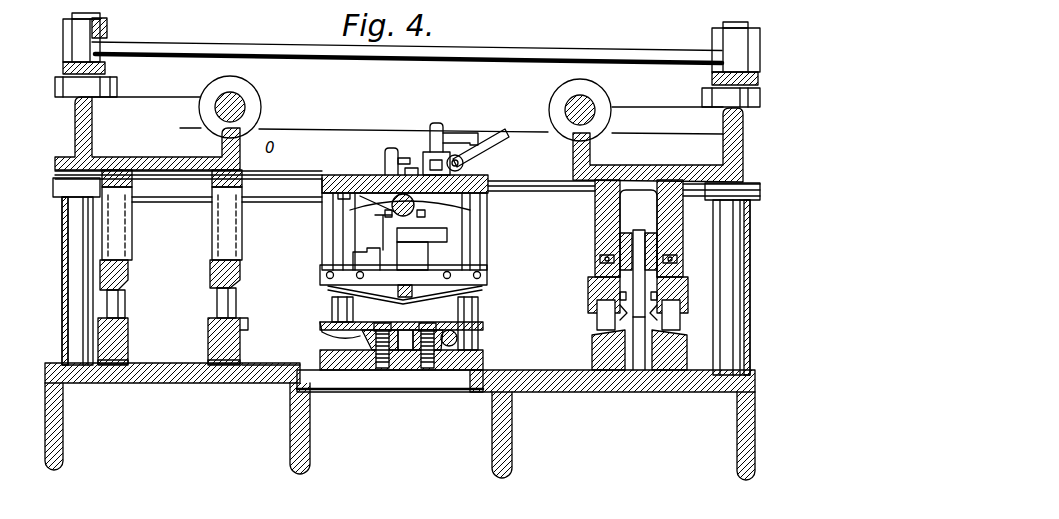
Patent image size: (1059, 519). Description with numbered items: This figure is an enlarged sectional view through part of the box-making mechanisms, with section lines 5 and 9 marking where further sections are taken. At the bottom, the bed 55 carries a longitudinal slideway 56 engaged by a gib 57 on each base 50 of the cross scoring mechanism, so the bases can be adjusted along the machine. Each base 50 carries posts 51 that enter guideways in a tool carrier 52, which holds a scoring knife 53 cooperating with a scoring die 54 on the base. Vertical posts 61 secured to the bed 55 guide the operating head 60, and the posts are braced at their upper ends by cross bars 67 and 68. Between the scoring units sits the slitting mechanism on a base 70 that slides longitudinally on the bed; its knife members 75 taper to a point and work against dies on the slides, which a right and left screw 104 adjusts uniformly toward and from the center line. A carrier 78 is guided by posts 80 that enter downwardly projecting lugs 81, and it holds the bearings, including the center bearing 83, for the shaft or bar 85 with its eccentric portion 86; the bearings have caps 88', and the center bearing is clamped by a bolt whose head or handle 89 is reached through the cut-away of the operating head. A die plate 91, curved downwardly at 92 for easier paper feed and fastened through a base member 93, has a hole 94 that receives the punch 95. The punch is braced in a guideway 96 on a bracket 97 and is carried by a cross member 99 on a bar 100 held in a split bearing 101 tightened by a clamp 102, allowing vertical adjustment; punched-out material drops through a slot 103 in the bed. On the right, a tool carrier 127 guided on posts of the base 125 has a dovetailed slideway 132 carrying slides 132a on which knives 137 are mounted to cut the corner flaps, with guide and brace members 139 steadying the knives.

The section line 5- 5 is at (502, 97).
The section line 9- 9 is at (646, 150).
The base 50 is at (208, 338).
The post 51 is at (217, 301).
The tool carrier 52 is at (212, 228).
The scoring knife 53 is at (210, 276).
The scoring die 54 is at (243, 332).
The bed 55 is at (168, 372).
The slideway 56 is at (269, 365).
The gib 57 is at (118, 366).
The operating head 60 is at (330, 128).
The vertical post 61 is at (66, 251).
The cross bar 67 is at (478, 59).
The cross bar 68 is at (106, 71).
The base 70 is at (486, 357).
The knife member 75 is at (325, 279).
The carrier 78 is at (334, 177).
The post 80 is at (479, 310).
The downwardly projecting lug 81 is at (487, 260).
The center bearing 83 is at (415, 203).
The shaft or bar 85 is at (392, 203).
The eccentric portion 86 is at (411, 174).
The cap 88' is at (338, 165).
The head or handle 89 is at (392, 146).
The die plate 91 is at (485, 330).
The downwardly curved portion 92 is at (330, 330).
The base member 93 is at (388, 341).
The hole 94 is at (403, 337).
The punch 95 is at (379, 311).
The guideway 96 is at (400, 258).
The bracket 97 is at (383, 222).
The cross member 99 is at (447, 236).
The bar 100 is at (478, 187).
The bearing 101 is at (447, 147).
The clamp 102 is at (501, 150).
The slot 103 is at (357, 386).
The right and left screw 104 is at (449, 347).
The base 125 is at (655, 372).
The tool carrier 127 is at (620, 240).
The dovetailed slideway 132 is at (660, 259).
The slide 132a is at (662, 243).
The knife 137 is at (640, 314).
The guide and brace member 139 is at (594, 302).